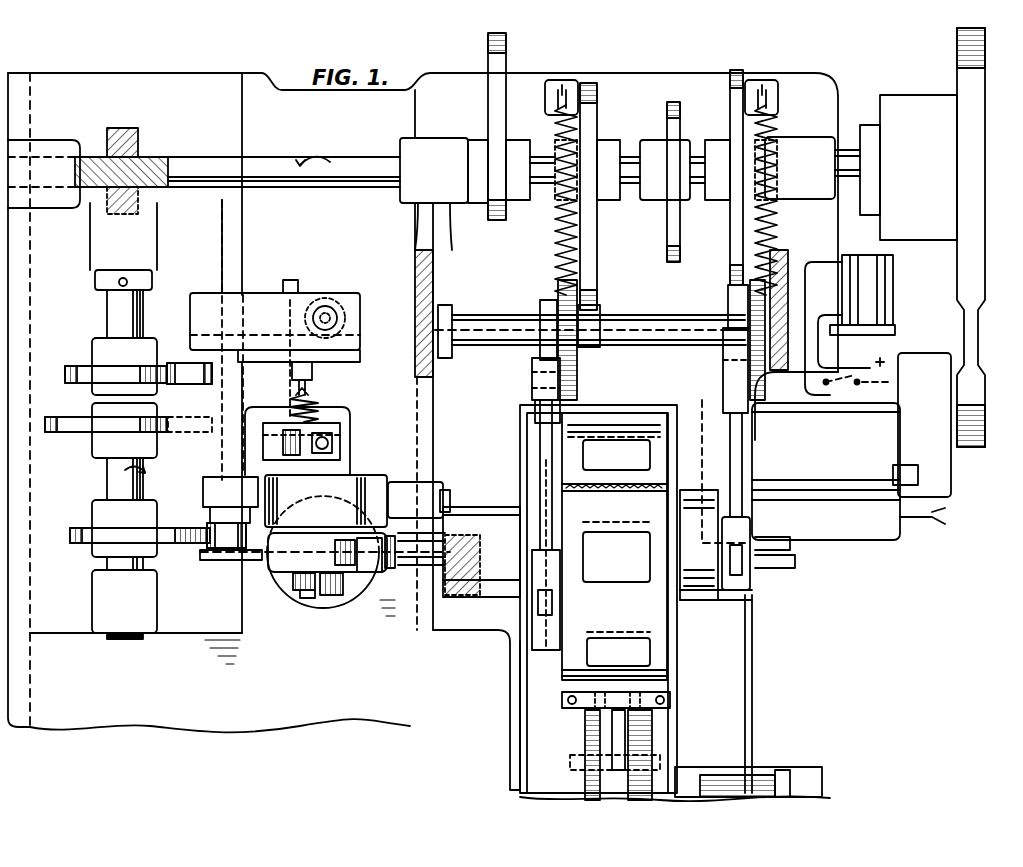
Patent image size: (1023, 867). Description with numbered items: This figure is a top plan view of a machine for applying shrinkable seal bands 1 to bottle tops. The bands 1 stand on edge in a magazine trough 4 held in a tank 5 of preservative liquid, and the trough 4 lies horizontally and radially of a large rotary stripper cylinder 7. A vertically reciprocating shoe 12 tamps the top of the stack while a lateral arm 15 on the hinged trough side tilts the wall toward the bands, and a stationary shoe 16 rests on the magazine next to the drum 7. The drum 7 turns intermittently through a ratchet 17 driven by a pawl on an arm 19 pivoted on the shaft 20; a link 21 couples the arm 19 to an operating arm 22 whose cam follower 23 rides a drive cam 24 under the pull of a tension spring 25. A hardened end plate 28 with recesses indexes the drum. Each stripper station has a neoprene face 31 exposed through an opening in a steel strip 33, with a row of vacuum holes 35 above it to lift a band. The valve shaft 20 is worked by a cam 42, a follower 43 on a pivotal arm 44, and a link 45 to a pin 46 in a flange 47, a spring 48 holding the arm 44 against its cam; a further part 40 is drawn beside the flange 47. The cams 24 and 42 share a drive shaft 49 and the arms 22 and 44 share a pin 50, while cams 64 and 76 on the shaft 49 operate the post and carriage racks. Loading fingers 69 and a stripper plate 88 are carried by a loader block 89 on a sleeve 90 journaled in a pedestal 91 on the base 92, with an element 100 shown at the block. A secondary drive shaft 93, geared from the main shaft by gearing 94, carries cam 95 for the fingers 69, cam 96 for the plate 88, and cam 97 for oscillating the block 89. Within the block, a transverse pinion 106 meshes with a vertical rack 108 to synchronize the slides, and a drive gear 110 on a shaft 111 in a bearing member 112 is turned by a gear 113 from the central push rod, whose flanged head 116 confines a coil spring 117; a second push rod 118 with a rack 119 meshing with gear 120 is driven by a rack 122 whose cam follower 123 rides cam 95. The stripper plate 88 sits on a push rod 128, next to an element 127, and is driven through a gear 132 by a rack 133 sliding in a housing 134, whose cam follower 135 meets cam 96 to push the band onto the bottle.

The seal band 1 is at (715, 782).
The magazine trough 4 is at (700, 783).
The tank 5 is at (520, 712).
The stripper cylinder 7 is at (665, 622).
The vertically reciprocating shoe 12 is at (612, 775).
The lateral arm 15 is at (600, 732).
The stationary shoe 16 is at (630, 715).
The ratchet 17 is at (555, 470).
The arm 19 is at (530, 606).
The shaft 20 is at (758, 530).
The link 21 is at (540, 440).
The operating arm 22 is at (575, 355).
The cam follower 23 is at (600, 310).
The drive cam 24 is at (597, 235).
The tension spring 25 is at (555, 248).
The end plate 28 is at (672, 483).
The neoprene face 31 is at (640, 440).
The stainless steel strip 33 is at (575, 660).
The vacuum holes 35 is at (628, 522).
The pin 40 is at (782, 568).
The cam 42 is at (730, 228).
The follower 43 is at (728, 300).
The pivotal arm 44 is at (755, 378).
The link 45 is at (742, 448).
The pin 46 is at (748, 592).
The flange 47 is at (750, 618).
The spring 48 is at (745, 250).
The drive shaft 49 is at (625, 150).
The pin 50 is at (662, 315).
The cam 64 is at (667, 238).
The loading fingers 69 is at (425, 575).
The cam 76 is at (488, 97).
The stripper plate 88 is at (392, 536).
The loader block 89 is at (280, 558).
The sleeve 90 is at (338, 543).
The pedestal 91 is at (368, 475).
The base 92 is at (418, 452).
The secondary drive shaft 93 is at (107, 312).
The gearing 94 is at (138, 157).
The cam 95 is at (78, 370).
The cam 96 is at (70, 430).
The cam 97 is at (175, 528).
The block 100 is at (372, 538).
The transverse pinion 106 is at (360, 580).
The vertical rack 108 is at (338, 548).
The drive gear 110 is at (338, 590).
The shaft 111 is at (298, 598).
The bearing member 112 is at (320, 590).
The gear 113 is at (295, 585).
The flanged head 116 is at (310, 383).
The coil spring 117 is at (292, 403).
The second push rod 118 is at (292, 372).
The rack 119 is at (315, 272).
The gear 120 is at (330, 305).
The rack 122 is at (365, 340).
The cam follower 123 is at (190, 385).
The gear 127 is at (228, 538).
The push rod 128 is at (210, 556).
The gear 132 is at (290, 432).
The rack 133 is at (283, 440).
The housing 134 is at (263, 448).
The cam follower 135 is at (332, 422).